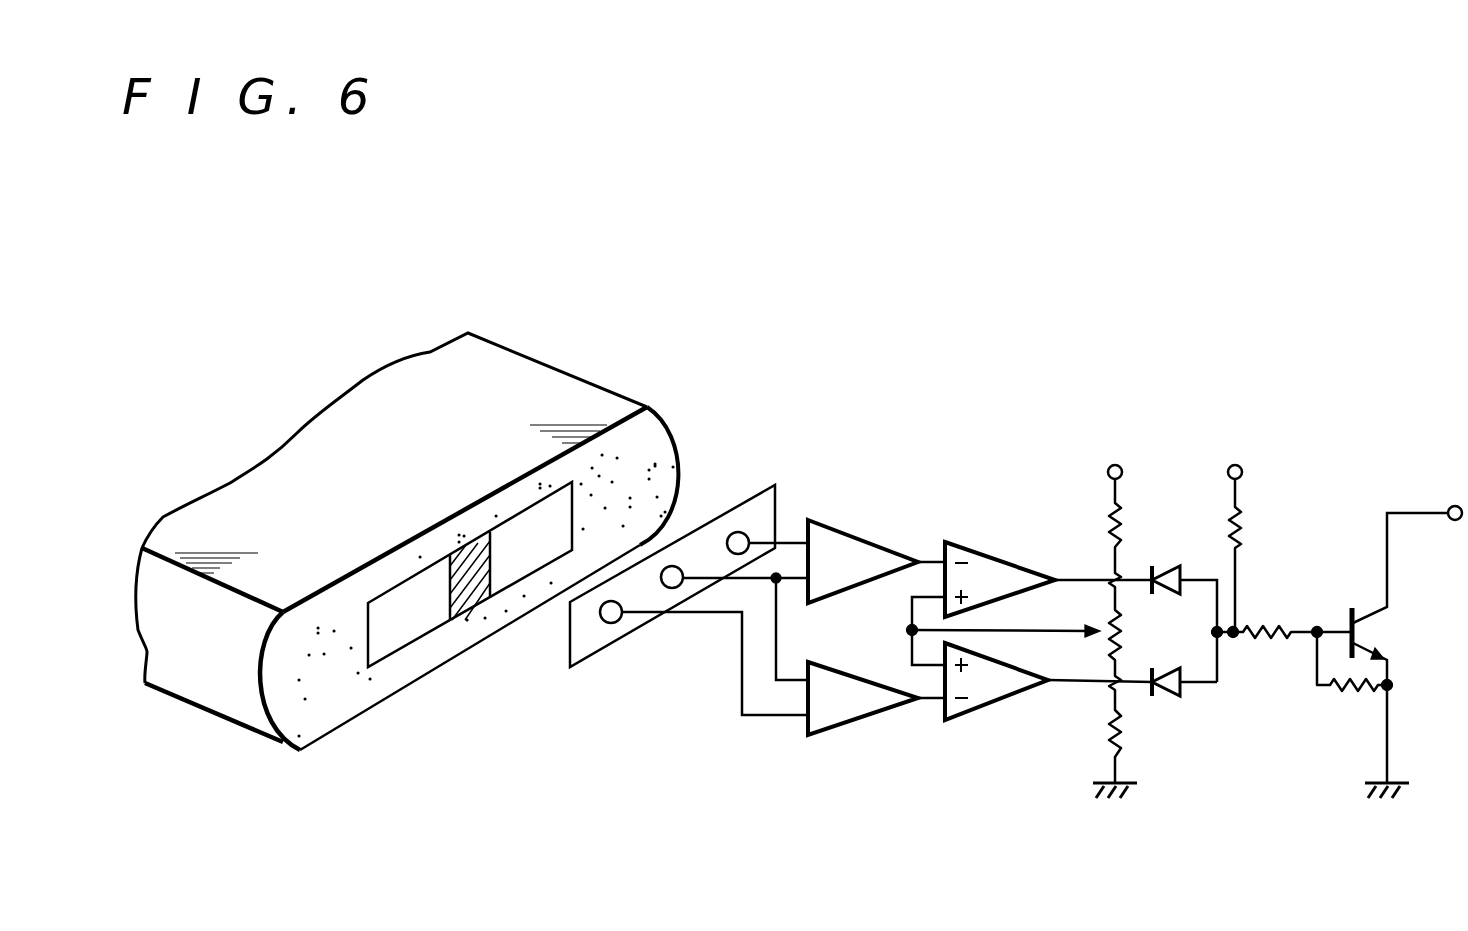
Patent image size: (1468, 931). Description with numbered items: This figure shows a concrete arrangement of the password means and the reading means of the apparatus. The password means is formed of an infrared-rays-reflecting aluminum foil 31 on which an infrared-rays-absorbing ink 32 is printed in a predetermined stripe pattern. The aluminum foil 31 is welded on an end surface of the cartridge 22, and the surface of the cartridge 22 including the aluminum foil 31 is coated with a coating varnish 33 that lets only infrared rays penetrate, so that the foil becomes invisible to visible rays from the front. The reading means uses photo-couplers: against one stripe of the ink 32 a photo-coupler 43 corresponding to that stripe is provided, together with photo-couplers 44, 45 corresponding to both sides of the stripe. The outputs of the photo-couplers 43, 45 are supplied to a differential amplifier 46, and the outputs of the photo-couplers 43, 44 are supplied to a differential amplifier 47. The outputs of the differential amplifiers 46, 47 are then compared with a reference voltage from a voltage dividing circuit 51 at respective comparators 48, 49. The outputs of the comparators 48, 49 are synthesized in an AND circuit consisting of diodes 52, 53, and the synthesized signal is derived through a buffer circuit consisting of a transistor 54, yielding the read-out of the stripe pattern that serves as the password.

The cartridge 22 is at (545, 383).
The coating varnish 33 is at (658, 447).
The aluminum foil 31 is at (393, 640).
The infrared rays absorbing ink 32 is at (470, 593).
The photo-coupler 43 is at (672, 588).
The photo-coupler 44 is at (611, 623).
The photo-coupler 45 is at (738, 554).
The differential amplifier 46 is at (862, 538).
The differential amplifier 47 is at (840, 727).
The comparator 48 is at (997, 560).
The comparator 49 is at (990, 707).
The voltage dividing circuit 51 is at (1135, 652).
The diode 52 is at (1170, 567).
The diode 53 is at (1157, 698).
The transistor 54 is at (1370, 607).